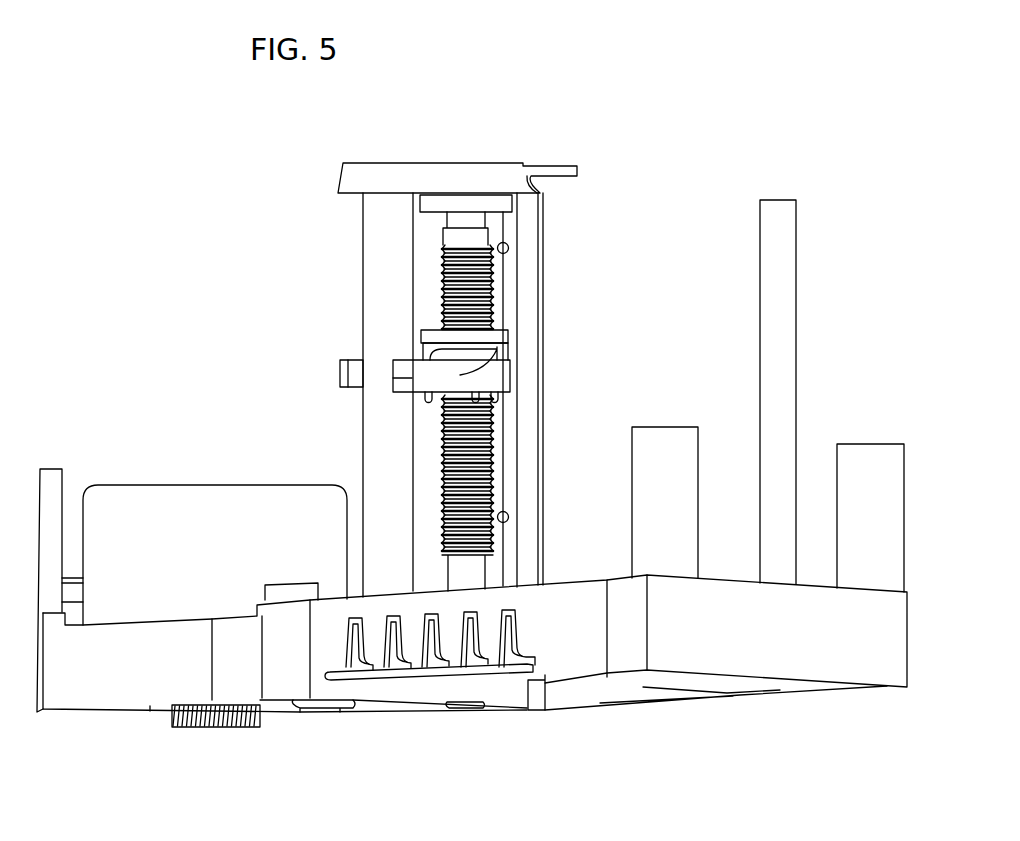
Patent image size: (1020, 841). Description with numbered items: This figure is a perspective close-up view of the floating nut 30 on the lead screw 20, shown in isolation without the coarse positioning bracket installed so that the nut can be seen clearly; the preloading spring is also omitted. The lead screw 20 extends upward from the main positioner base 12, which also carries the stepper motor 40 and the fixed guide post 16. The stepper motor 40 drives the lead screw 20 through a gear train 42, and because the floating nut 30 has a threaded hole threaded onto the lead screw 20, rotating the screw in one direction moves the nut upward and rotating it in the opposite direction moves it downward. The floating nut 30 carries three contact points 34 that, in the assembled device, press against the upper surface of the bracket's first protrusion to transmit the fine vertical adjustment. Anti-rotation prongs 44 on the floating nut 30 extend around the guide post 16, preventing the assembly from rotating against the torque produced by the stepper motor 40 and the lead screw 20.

The main positioner base 12 is at (130, 700).
The guide post 16 is at (372, 283).
The lead screw 20 is at (480, 442).
The floating nut 30 is at (482, 368).
The contact points 34 is at (427, 402).
The stepper motor 40 is at (153, 507).
The gear train 42 is at (223, 727).
The anti-rotation prongs 44 is at (348, 367).